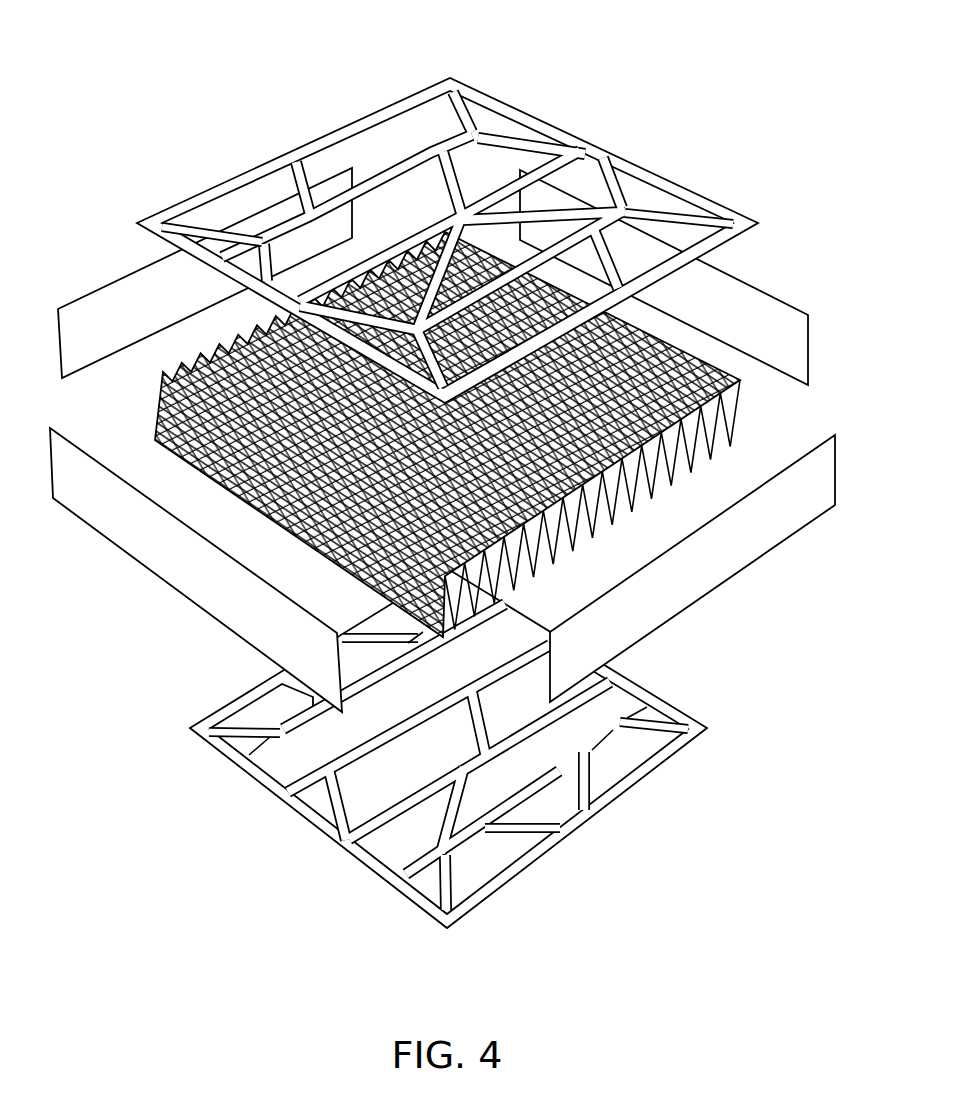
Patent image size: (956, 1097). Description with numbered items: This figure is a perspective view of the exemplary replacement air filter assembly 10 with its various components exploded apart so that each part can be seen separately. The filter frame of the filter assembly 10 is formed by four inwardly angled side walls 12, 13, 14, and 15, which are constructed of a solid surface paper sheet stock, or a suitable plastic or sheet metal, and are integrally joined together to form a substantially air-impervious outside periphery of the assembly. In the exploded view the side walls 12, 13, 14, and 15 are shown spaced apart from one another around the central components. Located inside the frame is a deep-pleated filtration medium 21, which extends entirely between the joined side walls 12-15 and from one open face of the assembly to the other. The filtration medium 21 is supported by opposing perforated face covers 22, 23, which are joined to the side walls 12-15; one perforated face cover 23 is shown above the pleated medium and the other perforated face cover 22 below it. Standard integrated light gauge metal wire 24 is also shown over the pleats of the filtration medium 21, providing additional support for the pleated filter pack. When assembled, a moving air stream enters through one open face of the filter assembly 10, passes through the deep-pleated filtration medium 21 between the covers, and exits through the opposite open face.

The filter assembly 10 is at (187, 116).
The side wall 12 is at (155, 562).
The side wall 13 is at (710, 572).
The side wall 14 is at (133, 287).
The side wall 15 is at (762, 308).
The deep-pleated filtration medium 21 is at (422, 434).
The perforated face cover 22 is at (587, 813).
The perforated face cover 23 is at (507, 108).
The light gauge metal wire 24 is at (243, 473).